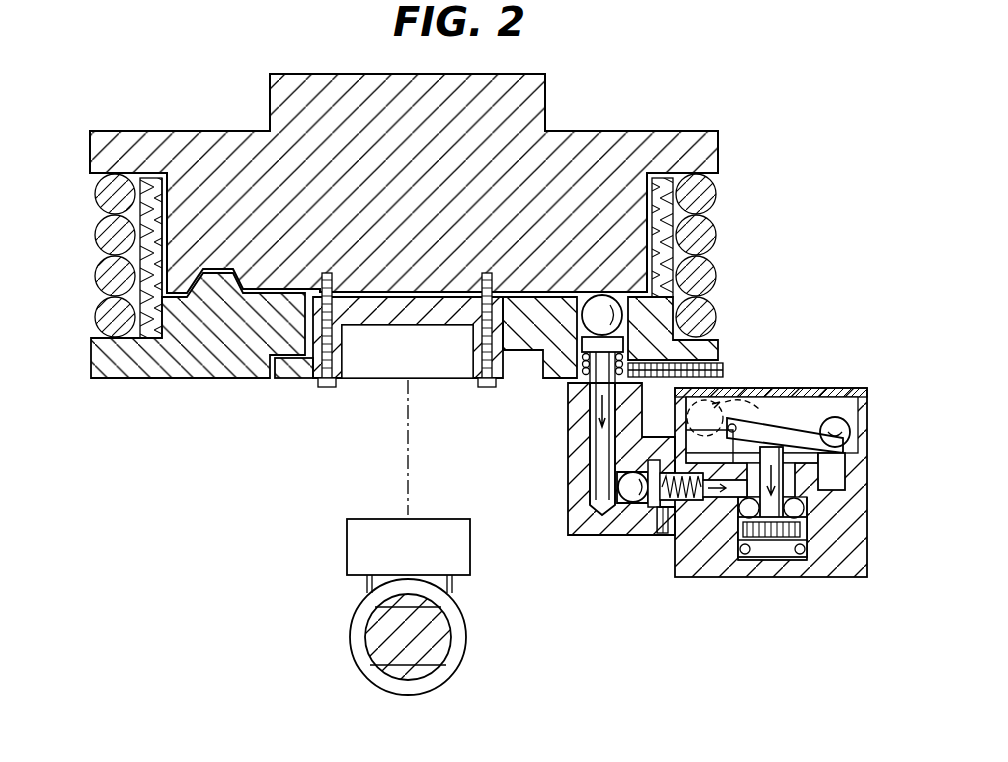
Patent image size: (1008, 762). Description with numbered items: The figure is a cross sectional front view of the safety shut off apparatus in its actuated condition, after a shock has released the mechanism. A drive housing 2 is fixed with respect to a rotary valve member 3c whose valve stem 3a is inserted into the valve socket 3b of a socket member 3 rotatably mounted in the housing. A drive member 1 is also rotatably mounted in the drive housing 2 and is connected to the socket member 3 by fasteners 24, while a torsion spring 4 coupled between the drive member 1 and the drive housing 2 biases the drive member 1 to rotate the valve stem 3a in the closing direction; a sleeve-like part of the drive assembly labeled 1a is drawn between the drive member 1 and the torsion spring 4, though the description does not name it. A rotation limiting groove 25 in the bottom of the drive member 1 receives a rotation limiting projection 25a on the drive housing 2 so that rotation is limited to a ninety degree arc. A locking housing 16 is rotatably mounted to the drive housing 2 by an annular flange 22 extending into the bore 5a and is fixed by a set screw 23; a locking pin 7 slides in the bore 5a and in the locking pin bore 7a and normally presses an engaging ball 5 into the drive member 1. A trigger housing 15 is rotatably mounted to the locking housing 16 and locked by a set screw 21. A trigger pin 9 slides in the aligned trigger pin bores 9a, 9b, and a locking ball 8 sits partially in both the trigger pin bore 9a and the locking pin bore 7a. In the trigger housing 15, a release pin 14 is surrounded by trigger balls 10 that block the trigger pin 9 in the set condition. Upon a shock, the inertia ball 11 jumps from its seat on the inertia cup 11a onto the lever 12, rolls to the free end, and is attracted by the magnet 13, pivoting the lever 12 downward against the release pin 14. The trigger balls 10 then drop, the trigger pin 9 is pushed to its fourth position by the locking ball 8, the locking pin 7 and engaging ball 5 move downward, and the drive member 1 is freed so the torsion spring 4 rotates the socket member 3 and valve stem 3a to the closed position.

The drive member 1 is at (702, 151).
The sleeve 1a is at (712, 191).
The drive housing 2 is at (133, 378).
The socket member 3 is at (292, 380).
The valve stem 3a is at (347, 540).
The valve socket 3b is at (395, 380).
The rotary valve member 3c is at (352, 648).
The torsion spring 4 is at (710, 236).
The engaging ball 5 is at (594, 312).
The bore 5a is at (703, 276).
The locking pin 7 is at (590, 500).
The locking pin bore 7a is at (598, 422).
The locking ball 8 is at (648, 516).
The trigger pin 9 is at (692, 505).
The trigger pin bore 9a is at (657, 530).
The trigger pin bore 9b is at (750, 555).
The trigger balls 10 is at (772, 522).
The inertia ball 11 is at (845, 421).
The inertia cup 11a is at (712, 438).
The lever 12 is at (848, 447).
The magnet 13 is at (832, 482).
The release pin 14 is at (798, 558).
The trigger housing 15 is at (864, 550).
The locking housing 16 is at (570, 470).
The set screw 21 is at (658, 520).
The annular flange 22 is at (557, 379).
The set screw 23 is at (722, 372).
The fasteners 24 is at (322, 389).
The rotation limiting groove 25 is at (213, 290).
The rotation limiting projection 25a is at (213, 293).